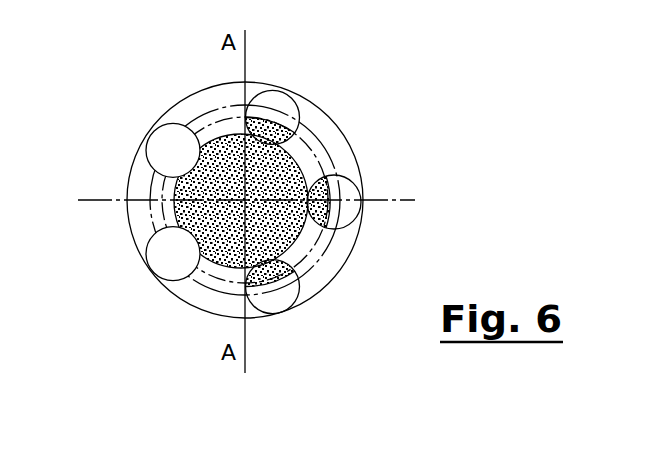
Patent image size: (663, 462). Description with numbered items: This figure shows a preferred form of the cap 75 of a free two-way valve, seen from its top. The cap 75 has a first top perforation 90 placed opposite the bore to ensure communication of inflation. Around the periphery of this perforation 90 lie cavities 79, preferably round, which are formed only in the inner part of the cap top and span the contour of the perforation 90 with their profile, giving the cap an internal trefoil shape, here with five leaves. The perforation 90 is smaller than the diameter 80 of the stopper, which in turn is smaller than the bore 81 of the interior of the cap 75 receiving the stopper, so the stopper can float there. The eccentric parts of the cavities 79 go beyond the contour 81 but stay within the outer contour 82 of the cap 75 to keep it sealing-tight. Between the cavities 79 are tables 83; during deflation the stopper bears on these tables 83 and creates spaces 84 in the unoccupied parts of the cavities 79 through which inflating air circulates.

The cap 75 is at (345, 216).
The outer contour of the cap 82 is at (310, 98).
The first top perforation 90 is at (345, 148).
The spaces for the circulation of inflating air 84 is at (160, 140).
The tables 83 is at (218, 128).
The cavities 79 is at (363, 180).
The diameter of the stopper 80 is at (330, 283).
The bore of the cap 81 is at (315, 300).